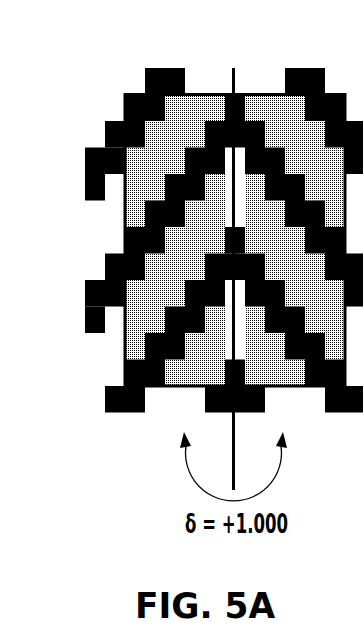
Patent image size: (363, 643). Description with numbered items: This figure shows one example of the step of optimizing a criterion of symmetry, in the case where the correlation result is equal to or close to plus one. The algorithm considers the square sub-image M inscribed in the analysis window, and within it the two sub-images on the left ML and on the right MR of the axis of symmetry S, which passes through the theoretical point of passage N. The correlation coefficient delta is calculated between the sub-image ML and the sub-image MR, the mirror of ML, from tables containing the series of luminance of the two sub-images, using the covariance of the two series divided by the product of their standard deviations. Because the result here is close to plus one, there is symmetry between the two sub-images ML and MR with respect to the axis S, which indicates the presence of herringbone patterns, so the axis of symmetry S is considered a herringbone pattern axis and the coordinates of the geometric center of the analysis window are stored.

The square sub-image M is at (186, 197).
The axis of symmetry S is at (233, 67).
The right sub-image MR is at (270, 94).
The left sub-image ML is at (123, 343).
The theoretical point of passage N is at (227, 232).